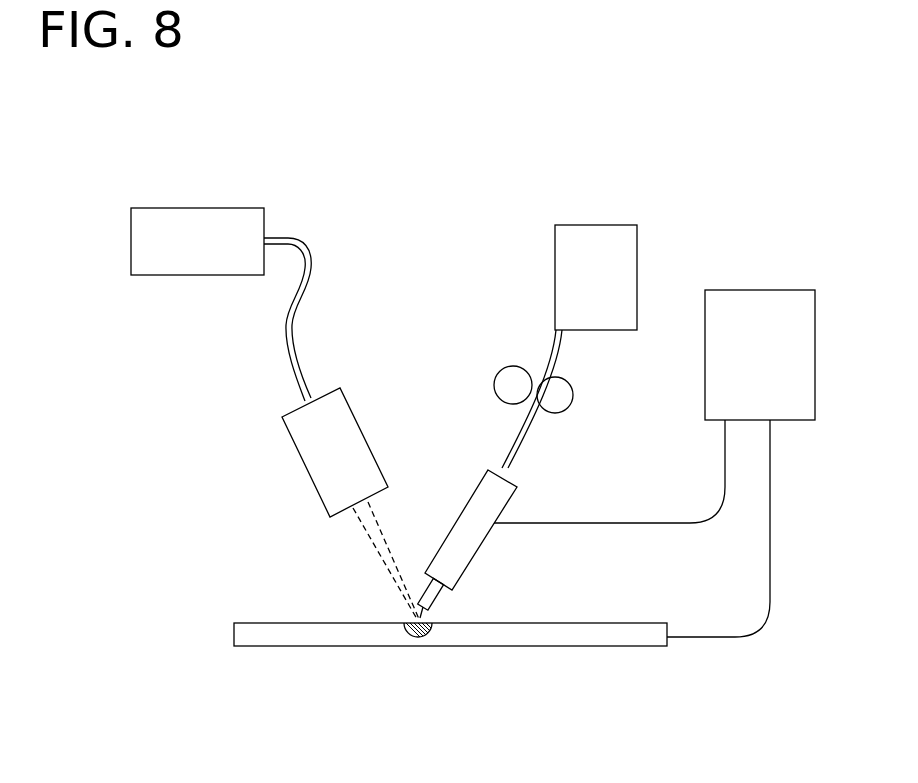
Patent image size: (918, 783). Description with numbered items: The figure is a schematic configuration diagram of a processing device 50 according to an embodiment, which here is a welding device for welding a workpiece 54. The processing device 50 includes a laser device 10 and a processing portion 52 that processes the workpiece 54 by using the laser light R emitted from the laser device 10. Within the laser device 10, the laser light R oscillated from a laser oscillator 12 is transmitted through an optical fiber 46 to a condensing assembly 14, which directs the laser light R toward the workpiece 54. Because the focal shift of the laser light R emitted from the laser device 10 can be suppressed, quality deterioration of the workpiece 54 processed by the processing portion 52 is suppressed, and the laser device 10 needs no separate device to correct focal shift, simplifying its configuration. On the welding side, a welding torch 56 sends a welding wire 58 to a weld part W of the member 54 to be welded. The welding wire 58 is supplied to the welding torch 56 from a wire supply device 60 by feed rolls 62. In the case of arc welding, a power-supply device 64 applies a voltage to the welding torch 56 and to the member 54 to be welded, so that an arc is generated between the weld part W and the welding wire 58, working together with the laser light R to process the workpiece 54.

The laser device 10 is at (262, 390).
The laser oscillator 12 is at (182, 208).
The condensing assembly 14 is at (295, 452).
The optical fiber 46 is at (287, 318).
The processing device 50 is at (460, 125).
The processing portion 52 is at (473, 392).
The workpiece 54 is at (337, 648).
The welding torch 56 is at (488, 540).
The welding wire 58 is at (525, 438).
The wire supply device 60 is at (637, 245).
The feed rolls 62 is at (568, 400).
The power-supply device 64 is at (772, 288).
The laser light R is at (368, 540).
The weld part W is at (415, 646).